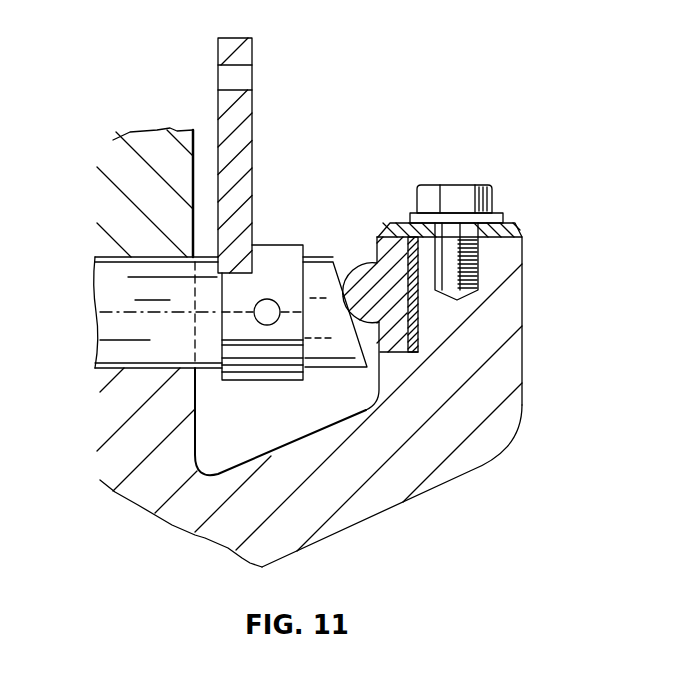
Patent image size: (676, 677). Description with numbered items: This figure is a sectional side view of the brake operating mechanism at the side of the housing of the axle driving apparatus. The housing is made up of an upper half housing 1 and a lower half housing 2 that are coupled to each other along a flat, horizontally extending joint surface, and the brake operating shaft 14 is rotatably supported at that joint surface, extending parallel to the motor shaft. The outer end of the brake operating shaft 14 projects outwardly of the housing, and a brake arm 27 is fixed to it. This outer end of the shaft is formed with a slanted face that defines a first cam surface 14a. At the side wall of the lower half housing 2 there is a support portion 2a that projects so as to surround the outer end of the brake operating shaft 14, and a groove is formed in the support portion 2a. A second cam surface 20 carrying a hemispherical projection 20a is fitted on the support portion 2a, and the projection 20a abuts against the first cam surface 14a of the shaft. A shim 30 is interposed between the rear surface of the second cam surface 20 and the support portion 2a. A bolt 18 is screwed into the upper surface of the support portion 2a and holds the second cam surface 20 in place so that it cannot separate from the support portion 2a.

The upper half housing 1 is at (112, 200).
The lower half housing 2 is at (128, 460).
The support portion 2a is at (397, 492).
The brake operating shaft 14 is at (206, 370).
The first cam surface 14a is at (340, 265).
The bolt 18 is at (463, 184).
The second cam surface 20 is at (397, 343).
The hemispherical projection 20a is at (353, 265).
The brake arm 27 is at (253, 105).
The shim 30 is at (417, 348).